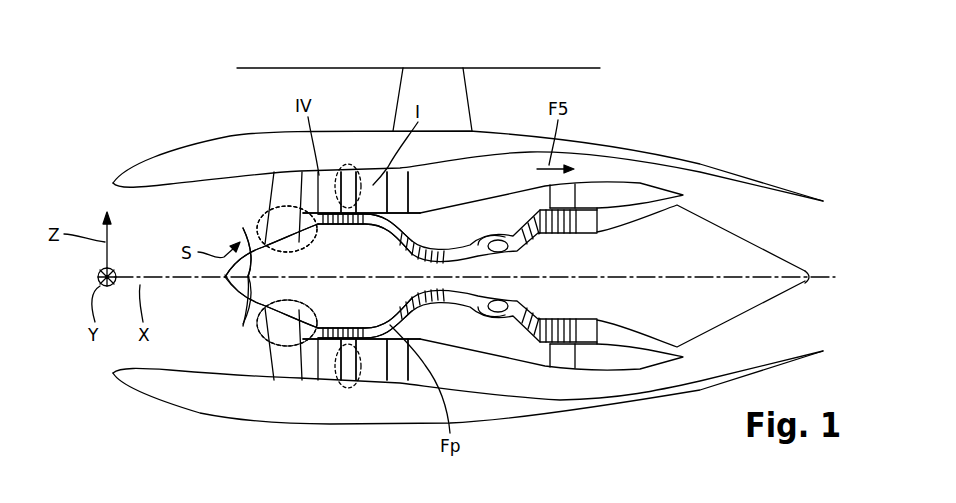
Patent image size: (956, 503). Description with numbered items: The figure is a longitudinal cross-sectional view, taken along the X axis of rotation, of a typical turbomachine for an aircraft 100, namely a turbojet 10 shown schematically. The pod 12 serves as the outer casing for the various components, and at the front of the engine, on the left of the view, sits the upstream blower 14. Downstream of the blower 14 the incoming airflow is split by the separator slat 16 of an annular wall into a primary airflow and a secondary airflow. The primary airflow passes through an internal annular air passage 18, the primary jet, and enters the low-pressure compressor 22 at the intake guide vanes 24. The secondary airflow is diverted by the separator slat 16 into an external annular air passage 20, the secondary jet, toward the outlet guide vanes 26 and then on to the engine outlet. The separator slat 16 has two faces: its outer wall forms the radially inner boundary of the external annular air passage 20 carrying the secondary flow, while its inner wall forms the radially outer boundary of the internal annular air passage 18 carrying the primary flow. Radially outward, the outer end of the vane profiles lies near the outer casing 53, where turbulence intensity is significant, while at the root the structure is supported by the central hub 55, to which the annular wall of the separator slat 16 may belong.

The aircraft 100 is at (300, 64).
The turbojet 10 is at (530, 105).
The pod 12 is at (365, 124).
The outer casing 53 is at (264, 172).
The external annular air passage 20 is at (336, 205).
The outlet guide vanes 26 is at (364, 202).
The central hub 55 is at (412, 207).
The separator slat 16 is at (302, 211).
The upstream blower 14 is at (268, 221).
The intake guide vanes 24 is at (298, 238).
The internal annular air passage 18 is at (326, 250).
The low-pressure compressor 22 is at (353, 240).